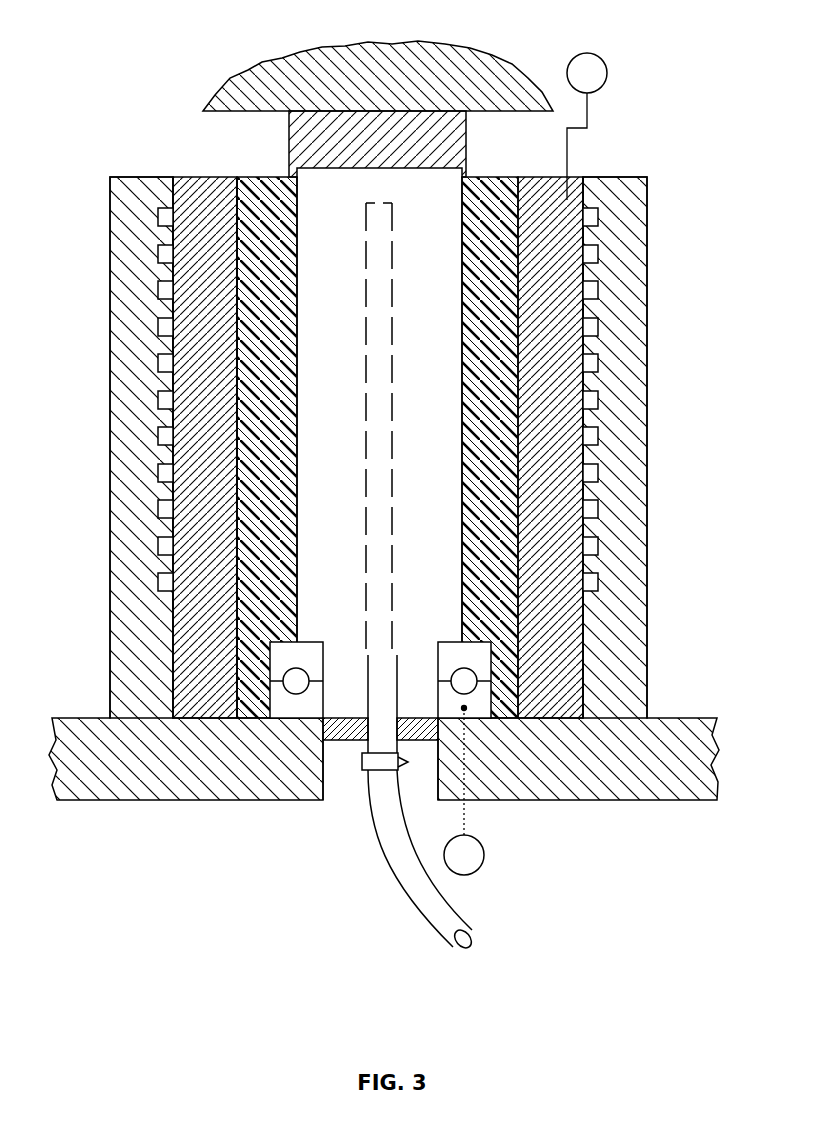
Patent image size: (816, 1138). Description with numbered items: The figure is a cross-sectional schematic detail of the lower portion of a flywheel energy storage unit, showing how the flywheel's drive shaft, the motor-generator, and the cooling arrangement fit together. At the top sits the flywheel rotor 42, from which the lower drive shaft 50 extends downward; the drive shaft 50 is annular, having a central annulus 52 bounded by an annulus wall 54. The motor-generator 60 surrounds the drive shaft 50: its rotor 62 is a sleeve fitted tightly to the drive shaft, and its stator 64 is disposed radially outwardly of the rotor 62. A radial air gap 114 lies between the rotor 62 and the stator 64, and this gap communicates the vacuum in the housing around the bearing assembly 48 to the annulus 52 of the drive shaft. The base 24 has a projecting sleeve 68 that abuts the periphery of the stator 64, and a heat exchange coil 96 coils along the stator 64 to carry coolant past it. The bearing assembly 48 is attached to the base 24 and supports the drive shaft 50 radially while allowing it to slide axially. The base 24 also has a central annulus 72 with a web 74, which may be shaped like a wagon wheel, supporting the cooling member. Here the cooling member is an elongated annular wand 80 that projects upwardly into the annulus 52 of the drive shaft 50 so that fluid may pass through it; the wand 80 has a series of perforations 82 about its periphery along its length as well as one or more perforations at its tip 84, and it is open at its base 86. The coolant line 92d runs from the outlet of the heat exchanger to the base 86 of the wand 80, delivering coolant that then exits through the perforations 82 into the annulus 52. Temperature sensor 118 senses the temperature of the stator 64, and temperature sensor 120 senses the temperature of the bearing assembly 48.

The base 24 is at (610, 800).
The flywheel rotor 42 is at (387, 97).
The bearing assembly 48 is at (323, 656).
The drive shaft 50 is at (467, 133).
The central annulus 52 is at (339, 447).
The annulus wall 54 is at (462, 237).
The motor-generator 60 is at (189, 144).
The rotor 62 is at (508, 176).
The stator 64 is at (186, 176).
The projecting sleeve 68 is at (108, 232).
The central annulus 72 is at (327, 809).
The web 74 is at (427, 742).
The wand 80 is at (395, 363).
The perforations 82 is at (363, 278).
The tip 84 is at (365, 203).
The base 86 is at (348, 777).
The coolant line 92d is at (423, 912).
The heat exchange coil 96 is at (157, 479).
The radial air gap 114 is at (237, 174).
The temperature sensor 118 is at (607, 73).
The temperature sensor 120 is at (484, 855).